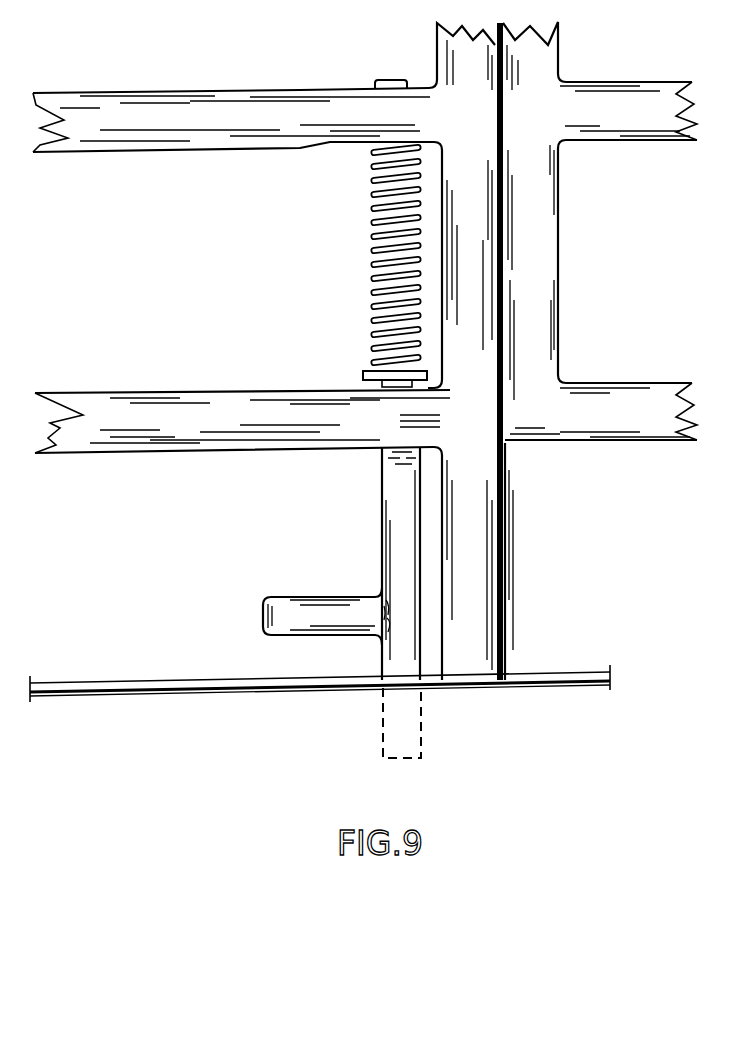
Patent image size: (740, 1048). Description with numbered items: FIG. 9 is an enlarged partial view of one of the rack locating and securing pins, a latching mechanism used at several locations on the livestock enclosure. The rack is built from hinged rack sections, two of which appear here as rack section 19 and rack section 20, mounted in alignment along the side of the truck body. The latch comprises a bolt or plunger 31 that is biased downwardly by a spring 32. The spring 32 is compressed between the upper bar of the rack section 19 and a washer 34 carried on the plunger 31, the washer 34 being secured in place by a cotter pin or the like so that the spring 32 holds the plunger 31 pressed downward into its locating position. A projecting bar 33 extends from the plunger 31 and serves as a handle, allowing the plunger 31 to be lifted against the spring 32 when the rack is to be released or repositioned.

The rack section 19 is at (192, 110).
The rack section 20 is at (530, 280).
The bolt or plunger 31 is at (402, 513).
The spring 32 is at (370, 237).
The projecting bar 33 is at (310, 617).
The washer 34 is at (367, 380).